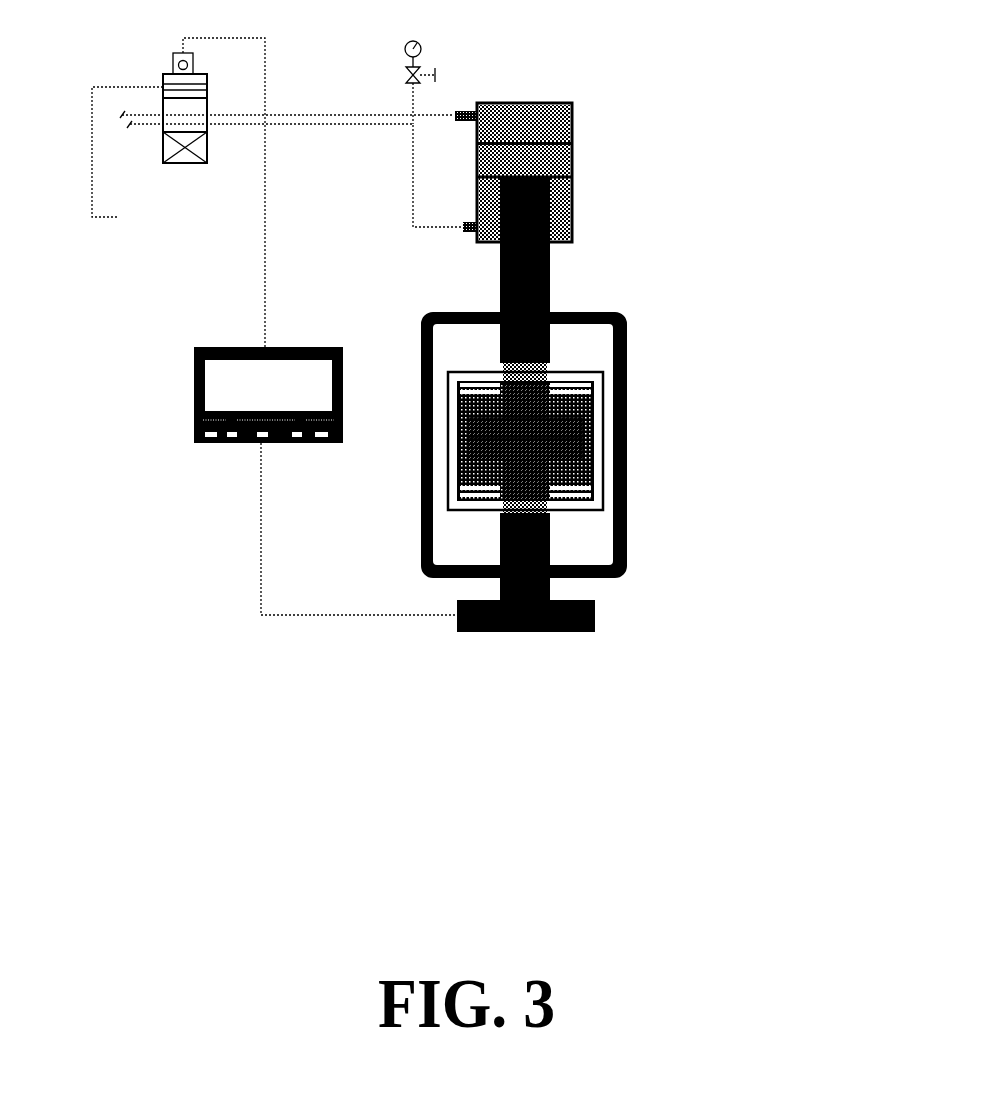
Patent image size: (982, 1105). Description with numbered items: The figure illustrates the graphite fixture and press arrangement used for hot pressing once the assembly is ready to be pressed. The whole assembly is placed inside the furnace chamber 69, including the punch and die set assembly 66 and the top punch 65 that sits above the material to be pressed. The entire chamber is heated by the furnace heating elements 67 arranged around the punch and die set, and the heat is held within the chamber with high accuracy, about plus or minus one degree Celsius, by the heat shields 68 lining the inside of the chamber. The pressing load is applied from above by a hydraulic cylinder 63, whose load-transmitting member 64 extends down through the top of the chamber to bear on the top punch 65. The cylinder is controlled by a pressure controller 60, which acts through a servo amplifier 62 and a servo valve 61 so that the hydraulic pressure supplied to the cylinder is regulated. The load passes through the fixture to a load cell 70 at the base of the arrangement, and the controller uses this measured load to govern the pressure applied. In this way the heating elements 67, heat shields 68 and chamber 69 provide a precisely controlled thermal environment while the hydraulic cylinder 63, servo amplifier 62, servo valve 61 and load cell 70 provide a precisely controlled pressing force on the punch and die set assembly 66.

The controller 60 is at (194, 380).
The servo valve 61 is at (127, 158).
The servo amplifier 62 is at (173, 56).
The hydraulic cylinder 63 is at (560, 203).
The piston rod 64 is at (552, 345).
The top punch 65 is at (587, 372).
The punch and die set assembly 66 is at (603, 415).
The furnace heating elements 67 is at (598, 472).
The heat shields 68 is at (592, 512).
The furnace chamber 69 is at (620, 575).
The load cell 70 is at (533, 632).